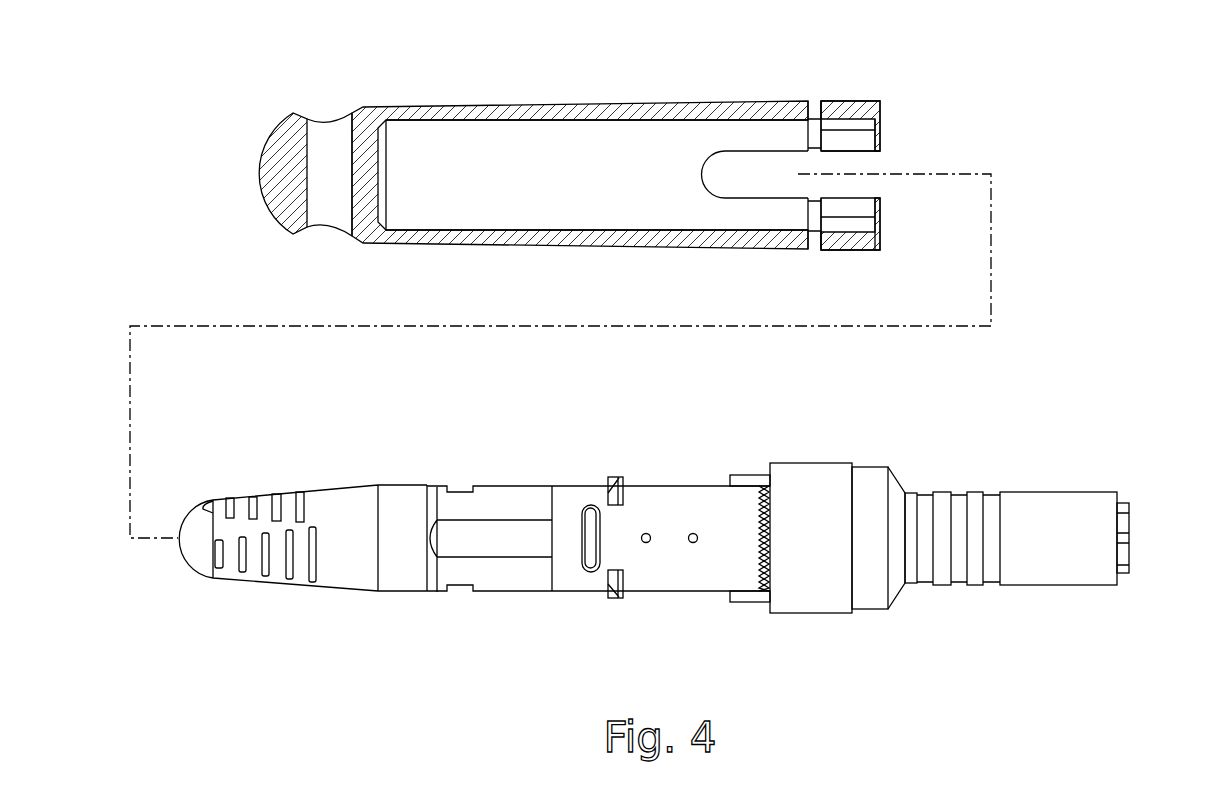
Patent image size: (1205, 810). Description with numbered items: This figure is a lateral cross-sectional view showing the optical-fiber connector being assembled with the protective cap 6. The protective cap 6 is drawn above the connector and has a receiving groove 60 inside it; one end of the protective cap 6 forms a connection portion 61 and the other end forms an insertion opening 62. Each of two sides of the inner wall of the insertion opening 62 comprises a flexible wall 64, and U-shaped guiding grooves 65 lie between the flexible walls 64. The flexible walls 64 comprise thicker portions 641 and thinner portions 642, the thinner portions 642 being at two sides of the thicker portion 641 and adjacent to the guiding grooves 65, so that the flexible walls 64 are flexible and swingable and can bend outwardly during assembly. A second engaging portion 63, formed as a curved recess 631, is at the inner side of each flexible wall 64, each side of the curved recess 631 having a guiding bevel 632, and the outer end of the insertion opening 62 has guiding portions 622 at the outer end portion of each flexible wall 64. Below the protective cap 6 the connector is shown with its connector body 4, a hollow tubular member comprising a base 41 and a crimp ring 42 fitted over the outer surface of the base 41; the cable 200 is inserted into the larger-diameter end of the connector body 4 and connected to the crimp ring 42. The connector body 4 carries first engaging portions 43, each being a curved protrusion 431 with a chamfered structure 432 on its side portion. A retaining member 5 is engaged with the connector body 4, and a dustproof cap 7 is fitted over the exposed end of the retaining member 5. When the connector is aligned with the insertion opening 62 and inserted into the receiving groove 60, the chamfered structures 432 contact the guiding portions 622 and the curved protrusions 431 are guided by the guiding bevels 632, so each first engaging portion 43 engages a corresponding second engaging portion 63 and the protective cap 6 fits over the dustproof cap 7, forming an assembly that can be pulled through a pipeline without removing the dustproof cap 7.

The connector body 4 is at (810, 478).
The base 41 is at (897, 487).
The crimp ring 42 is at (1055, 498).
The first engaging portion 43 is at (658, 533).
The curved protrusion 431 is at (611, 482).
The chamfered structure 432 is at (608, 598).
The retaining member 5 is at (494, 577).
The protective cap 6 is at (613, 164).
The receiving groove 60 is at (563, 162).
The connection portion 61 is at (332, 142).
The insertion opening 62 is at (894, 250).
The guiding portion 622 is at (894, 240).
The second engaging portion 63 is at (774, 166).
The curved recess 631 is at (807, 135).
The guiding bevel 632 is at (808, 202).
The flexible wall 64 is at (887, 95).
The thicker portion 641 is at (848, 240).
The thinner portion 642 is at (872, 143).
The guiding groove 65 is at (730, 163).
The dustproof cap 7 is at (332, 505).
The cable 200 is at (1125, 520).